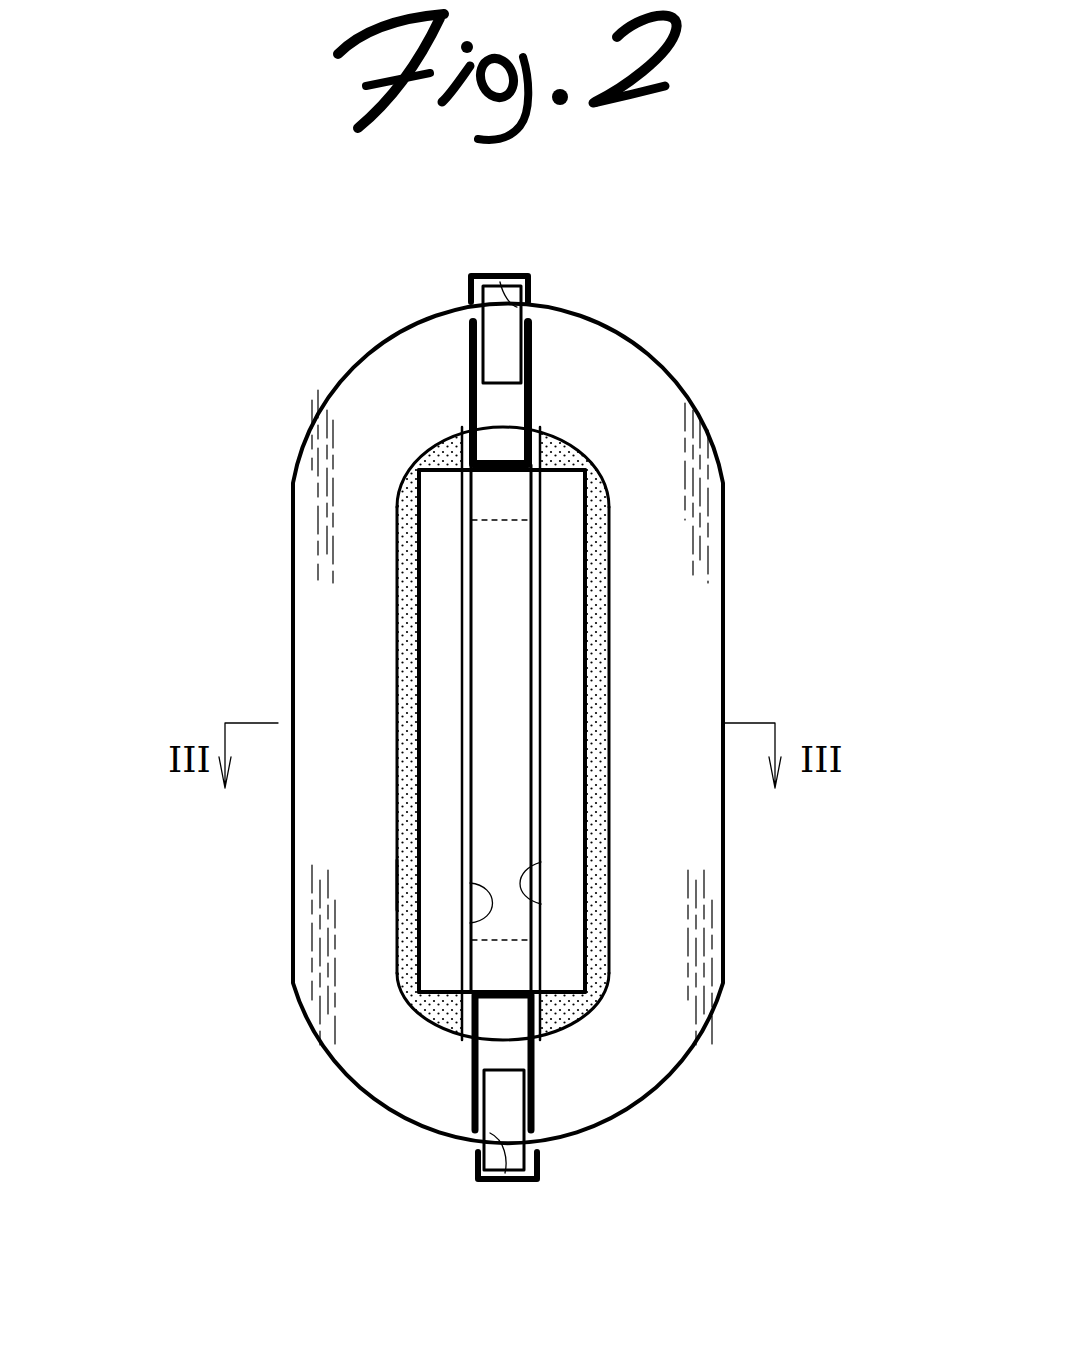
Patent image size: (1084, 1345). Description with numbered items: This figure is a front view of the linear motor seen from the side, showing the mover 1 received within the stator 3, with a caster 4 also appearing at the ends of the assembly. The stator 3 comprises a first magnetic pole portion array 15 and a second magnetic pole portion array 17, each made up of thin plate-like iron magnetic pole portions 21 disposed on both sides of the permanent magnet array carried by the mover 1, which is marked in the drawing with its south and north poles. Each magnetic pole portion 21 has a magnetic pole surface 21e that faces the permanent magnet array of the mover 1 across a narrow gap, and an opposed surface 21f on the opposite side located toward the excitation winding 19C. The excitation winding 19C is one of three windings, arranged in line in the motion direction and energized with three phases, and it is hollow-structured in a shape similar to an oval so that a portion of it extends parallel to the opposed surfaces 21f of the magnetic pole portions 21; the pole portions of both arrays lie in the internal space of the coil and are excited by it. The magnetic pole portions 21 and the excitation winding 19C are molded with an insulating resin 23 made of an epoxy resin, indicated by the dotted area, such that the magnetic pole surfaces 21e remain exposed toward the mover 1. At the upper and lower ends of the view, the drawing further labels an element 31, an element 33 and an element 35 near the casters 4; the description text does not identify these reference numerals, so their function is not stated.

The mover 1 is at (528, 497).
The stator 3 is at (253, 612).
The caster 4 is at (565, 407).
The first magnetic pole portion array 15 is at (420, 607).
The second magnetic pole portion array 17 is at (582, 602).
The excitation winding 19C is at (318, 450).
The magnetic pole portion 21 is at (440, 642).
The magnetic pole surface 21e is at (542, 905).
The opposed surface 21f is at (585, 843).
The insulating resin 23 is at (450, 1010).
The end member 31 is at (500, 323).
The holder body 33 is at (537, 362).
The end cap 35 is at (527, 313).